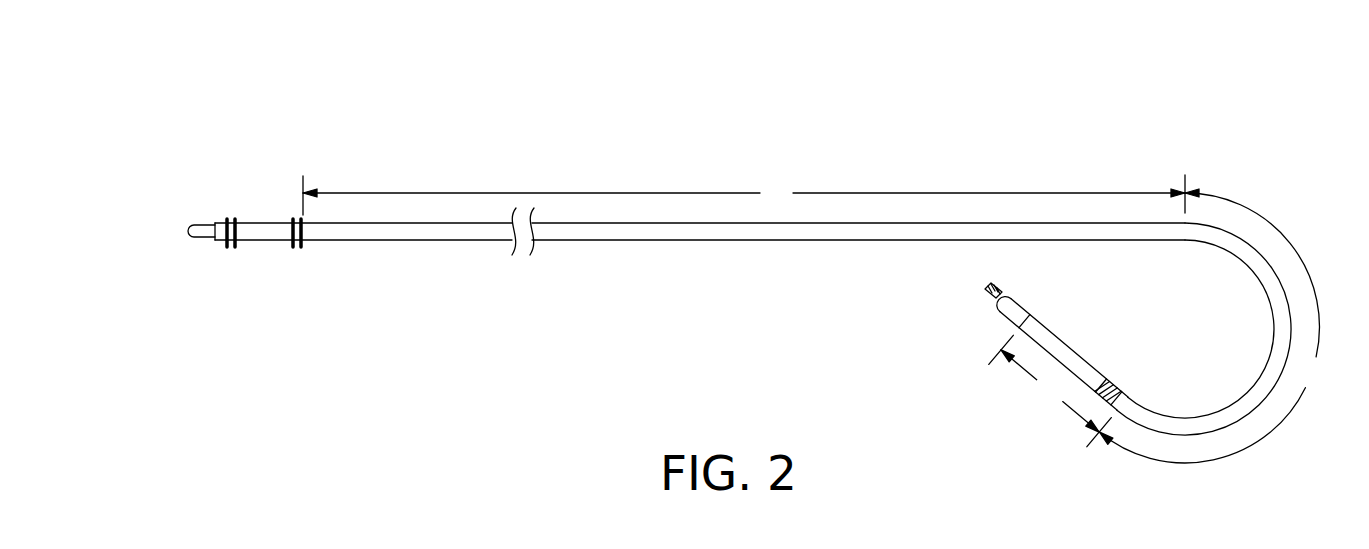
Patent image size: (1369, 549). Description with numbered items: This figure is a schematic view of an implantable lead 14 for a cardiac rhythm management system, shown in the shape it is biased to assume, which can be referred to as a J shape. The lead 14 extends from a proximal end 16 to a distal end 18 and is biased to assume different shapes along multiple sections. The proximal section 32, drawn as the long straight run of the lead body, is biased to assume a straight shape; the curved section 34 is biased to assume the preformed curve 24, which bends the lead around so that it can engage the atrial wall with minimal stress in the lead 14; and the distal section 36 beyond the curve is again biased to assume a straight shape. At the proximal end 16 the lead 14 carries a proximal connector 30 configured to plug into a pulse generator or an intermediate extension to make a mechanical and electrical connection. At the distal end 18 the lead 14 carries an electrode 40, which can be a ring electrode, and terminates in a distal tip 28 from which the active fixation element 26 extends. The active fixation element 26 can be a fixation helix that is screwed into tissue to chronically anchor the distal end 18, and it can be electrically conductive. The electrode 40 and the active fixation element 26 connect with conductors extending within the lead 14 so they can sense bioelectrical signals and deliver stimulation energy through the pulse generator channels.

The lead 14 is at (648, 92).
The proximal end 16 is at (450, 232).
The distal end 18 is at (1160, 238).
The preformed curve 24 is at (1272, 352).
The active fixation element 26 is at (986, 294).
The distal tip 28 is at (1003, 301).
The proximal connector 30 is at (270, 242).
The proximal section 32 is at (744, 195).
The curved section 34 is at (1210, 326).
The distal section 36 is at (1050, 390).
The electrode 40 is at (1117, 376).